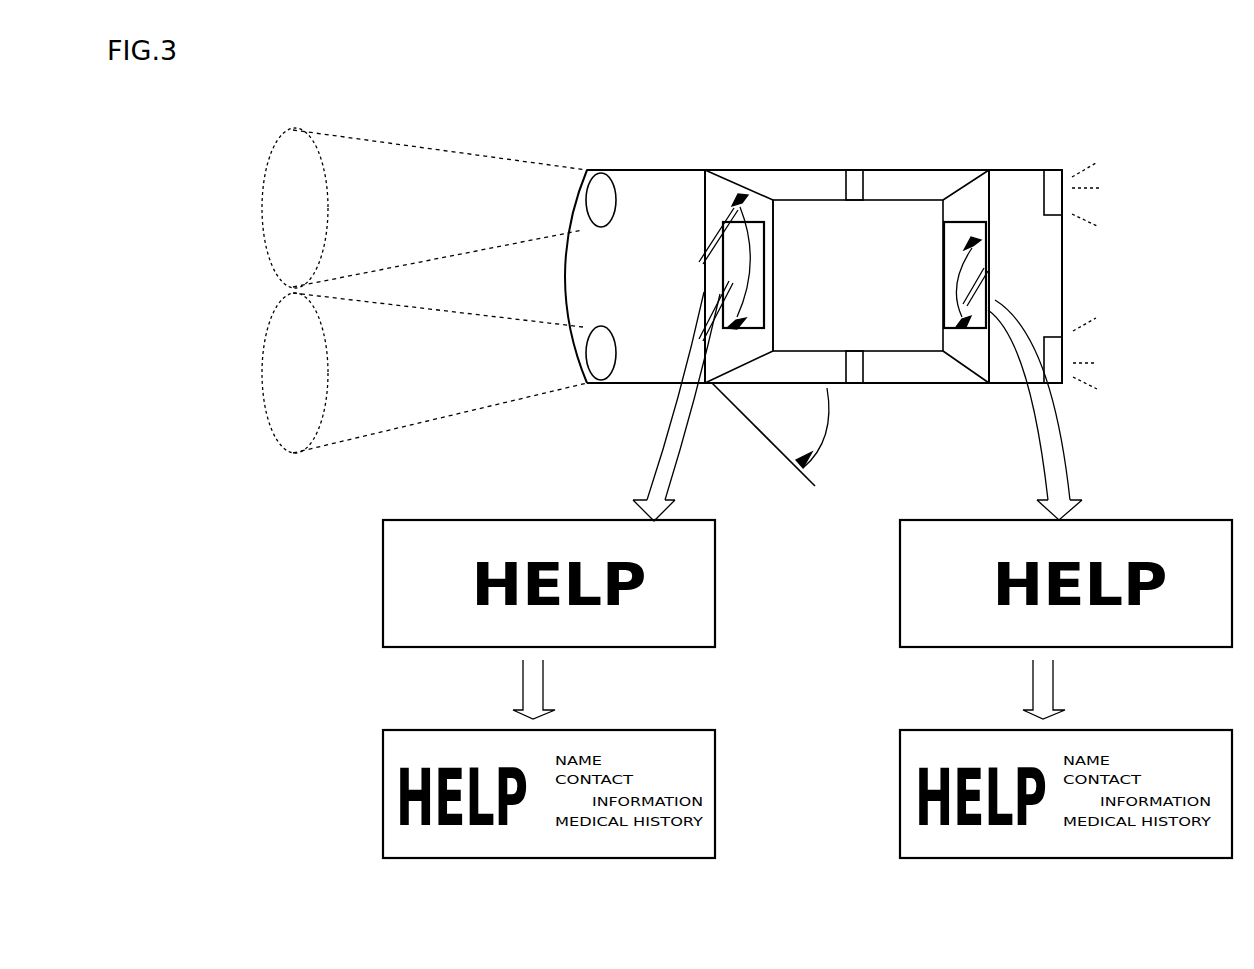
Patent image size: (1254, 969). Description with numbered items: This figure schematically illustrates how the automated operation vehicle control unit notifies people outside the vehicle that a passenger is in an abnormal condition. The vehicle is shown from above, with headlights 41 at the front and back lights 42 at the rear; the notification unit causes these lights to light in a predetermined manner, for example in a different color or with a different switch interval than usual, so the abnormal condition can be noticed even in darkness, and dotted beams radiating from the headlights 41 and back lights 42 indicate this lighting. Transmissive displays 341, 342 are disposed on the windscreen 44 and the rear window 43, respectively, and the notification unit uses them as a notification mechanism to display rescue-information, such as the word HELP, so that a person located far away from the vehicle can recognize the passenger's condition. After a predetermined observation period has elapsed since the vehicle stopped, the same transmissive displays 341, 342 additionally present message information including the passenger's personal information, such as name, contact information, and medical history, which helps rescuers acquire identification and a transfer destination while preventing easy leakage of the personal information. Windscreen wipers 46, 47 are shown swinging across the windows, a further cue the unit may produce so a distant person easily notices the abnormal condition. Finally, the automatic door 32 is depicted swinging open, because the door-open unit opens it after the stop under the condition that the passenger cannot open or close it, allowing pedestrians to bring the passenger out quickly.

The automatic door 32 is at (758, 444).
The headlights 41 is at (588, 200).
The back lights 42 is at (1052, 204).
The rear window 43 is at (973, 200).
The windscreen 44 is at (718, 197).
The windscreen wiper 46 is at (990, 287).
The windscreen wiper 47 is at (707, 287).
The transmissive display 341 is at (764, 222).
The transmissive display 342 is at (965, 238).